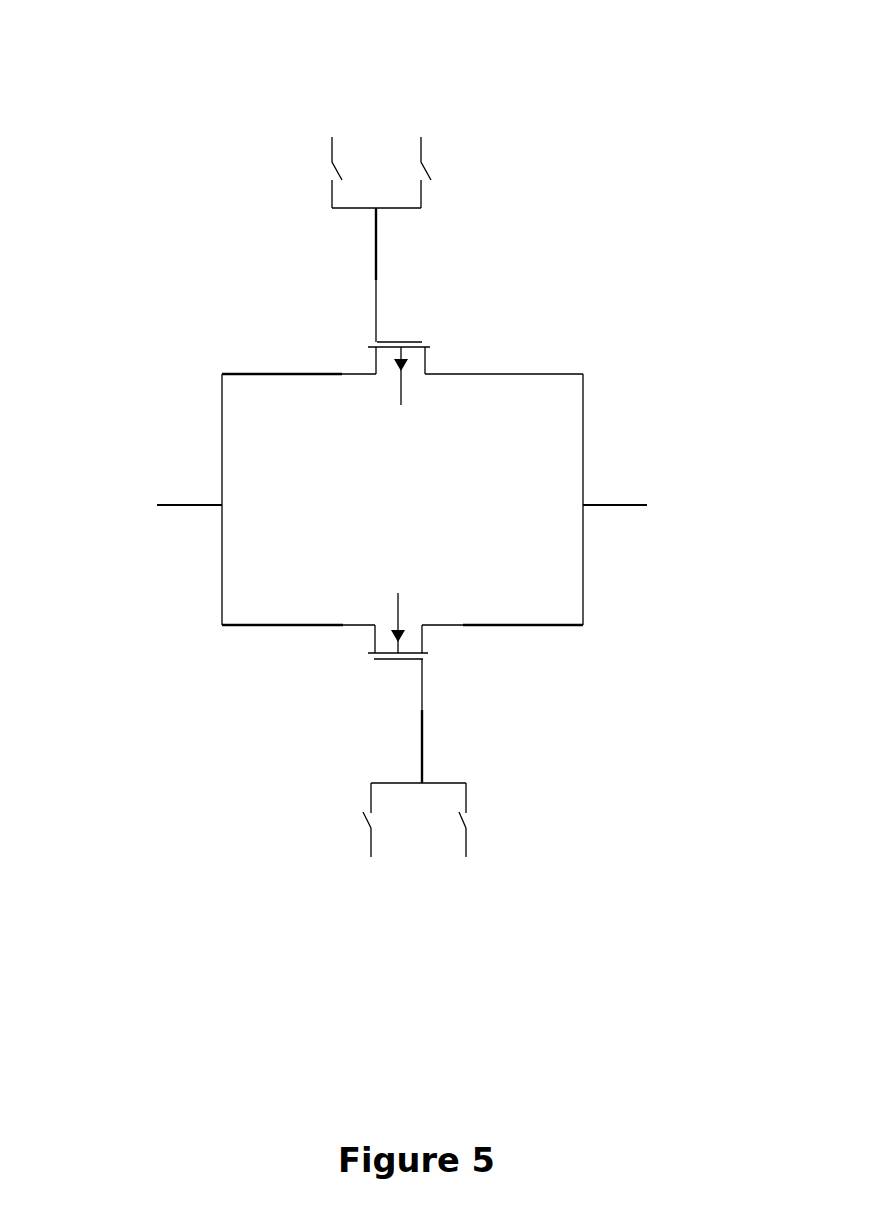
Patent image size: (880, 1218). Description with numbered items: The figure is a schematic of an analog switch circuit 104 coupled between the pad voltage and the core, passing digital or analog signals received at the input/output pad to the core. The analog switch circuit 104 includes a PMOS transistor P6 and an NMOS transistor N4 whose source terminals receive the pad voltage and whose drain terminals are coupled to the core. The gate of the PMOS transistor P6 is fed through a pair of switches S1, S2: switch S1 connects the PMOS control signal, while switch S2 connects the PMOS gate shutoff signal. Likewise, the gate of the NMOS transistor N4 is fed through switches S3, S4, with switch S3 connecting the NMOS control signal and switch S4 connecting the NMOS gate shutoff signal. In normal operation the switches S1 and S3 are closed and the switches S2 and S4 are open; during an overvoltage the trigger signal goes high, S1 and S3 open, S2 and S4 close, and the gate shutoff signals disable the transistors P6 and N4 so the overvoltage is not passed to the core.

The analog switch circuit 104 is at (514, 68).
The PMOS transistor P6 is at (413, 355).
The NMOS transistor N4 is at (384, 642).
The switch S1 is at (443, 172).
The switch S2 is at (315, 172).
The switch S3 is at (487, 820).
The switch S4 is at (346, 820).